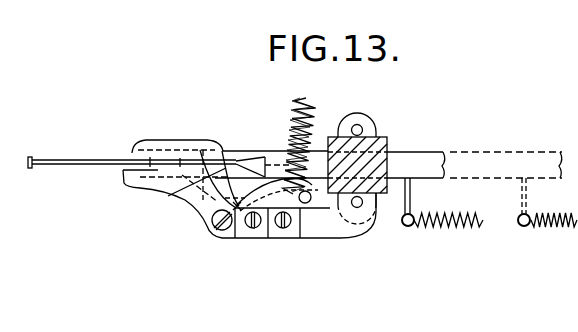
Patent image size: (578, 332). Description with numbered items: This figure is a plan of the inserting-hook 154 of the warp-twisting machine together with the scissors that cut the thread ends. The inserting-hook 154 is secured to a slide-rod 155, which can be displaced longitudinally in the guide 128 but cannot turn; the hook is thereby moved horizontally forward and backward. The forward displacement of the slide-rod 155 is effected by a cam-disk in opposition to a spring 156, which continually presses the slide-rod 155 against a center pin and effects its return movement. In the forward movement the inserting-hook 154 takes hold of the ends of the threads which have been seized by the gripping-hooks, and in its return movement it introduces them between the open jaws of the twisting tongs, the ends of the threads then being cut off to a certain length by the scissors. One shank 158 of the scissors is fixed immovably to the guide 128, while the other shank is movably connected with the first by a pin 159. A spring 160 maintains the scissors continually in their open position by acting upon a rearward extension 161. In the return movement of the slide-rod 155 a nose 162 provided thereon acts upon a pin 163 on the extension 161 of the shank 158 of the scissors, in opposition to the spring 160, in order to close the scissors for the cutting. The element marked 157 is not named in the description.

The guide 128 is at (387, 141).
The inserting-hook 154 is at (97, 160).
The slide-rod 155 is at (453, 179).
The spring 156 is at (484, 229).
The housing 157 is at (180, 140).
The shank of the scissors 158 is at (147, 184).
The pin 159 is at (224, 236).
The spring 160 is at (292, 118).
The rearward extension 161 is at (263, 200).
The nose 162 is at (173, 197).
The pin 163 is at (313, 192).